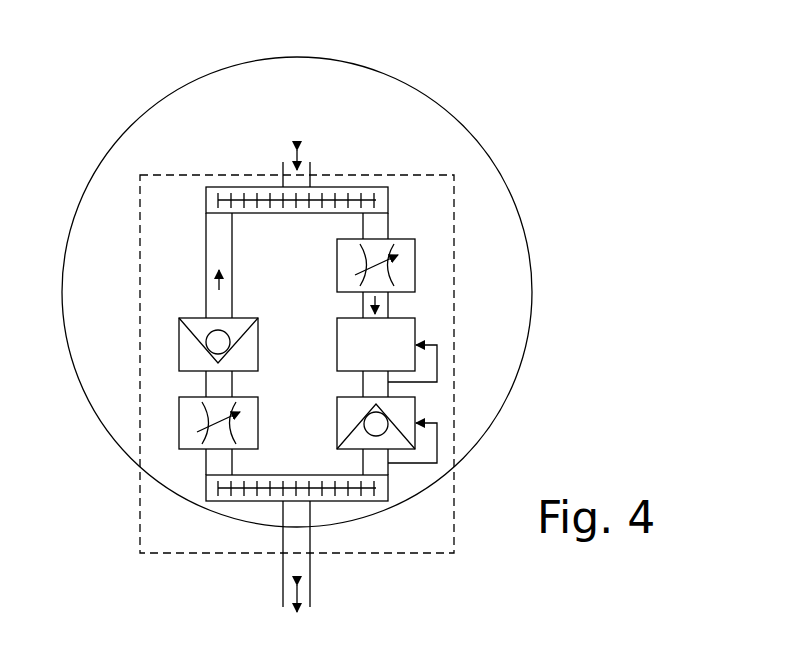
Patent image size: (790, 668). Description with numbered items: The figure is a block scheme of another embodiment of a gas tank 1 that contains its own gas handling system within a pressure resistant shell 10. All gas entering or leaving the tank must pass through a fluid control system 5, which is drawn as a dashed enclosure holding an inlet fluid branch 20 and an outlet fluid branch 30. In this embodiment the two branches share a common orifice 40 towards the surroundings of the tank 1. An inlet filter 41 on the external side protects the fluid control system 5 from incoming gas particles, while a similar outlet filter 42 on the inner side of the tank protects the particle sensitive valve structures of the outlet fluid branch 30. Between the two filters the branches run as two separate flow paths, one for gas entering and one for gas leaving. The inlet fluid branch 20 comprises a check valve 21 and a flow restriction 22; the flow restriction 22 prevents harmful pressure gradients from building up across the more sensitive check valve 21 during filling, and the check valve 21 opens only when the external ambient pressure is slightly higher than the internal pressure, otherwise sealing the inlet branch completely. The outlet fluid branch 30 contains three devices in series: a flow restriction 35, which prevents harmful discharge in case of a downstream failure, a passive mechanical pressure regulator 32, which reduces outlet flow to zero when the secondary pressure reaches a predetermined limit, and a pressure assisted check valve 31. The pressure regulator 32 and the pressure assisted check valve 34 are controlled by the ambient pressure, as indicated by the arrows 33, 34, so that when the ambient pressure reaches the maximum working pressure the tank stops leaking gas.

The tank 1 is at (537, 90).
The fluid control system 5 is at (140, 525).
The pressure resistant shell 10 is at (533, 293).
The inlet fluid branch 20 is at (206, 268).
The check valve 21 is at (179, 345).
The flow restriction 22 is at (179, 424).
The outlet fluid branch 30 is at (388, 229).
The pressure assisted check valve 31 is at (337, 418).
The pressure regulator 32 is at (337, 333).
The arrow 33 is at (437, 434).
The pressure assisted check valve 34 is at (437, 361).
The flow restriction 35 is at (415, 268).
The common orifice 40 is at (297, 545).
The inlet filter 41 is at (250, 501).
The outlet filter 42 is at (255, 192).